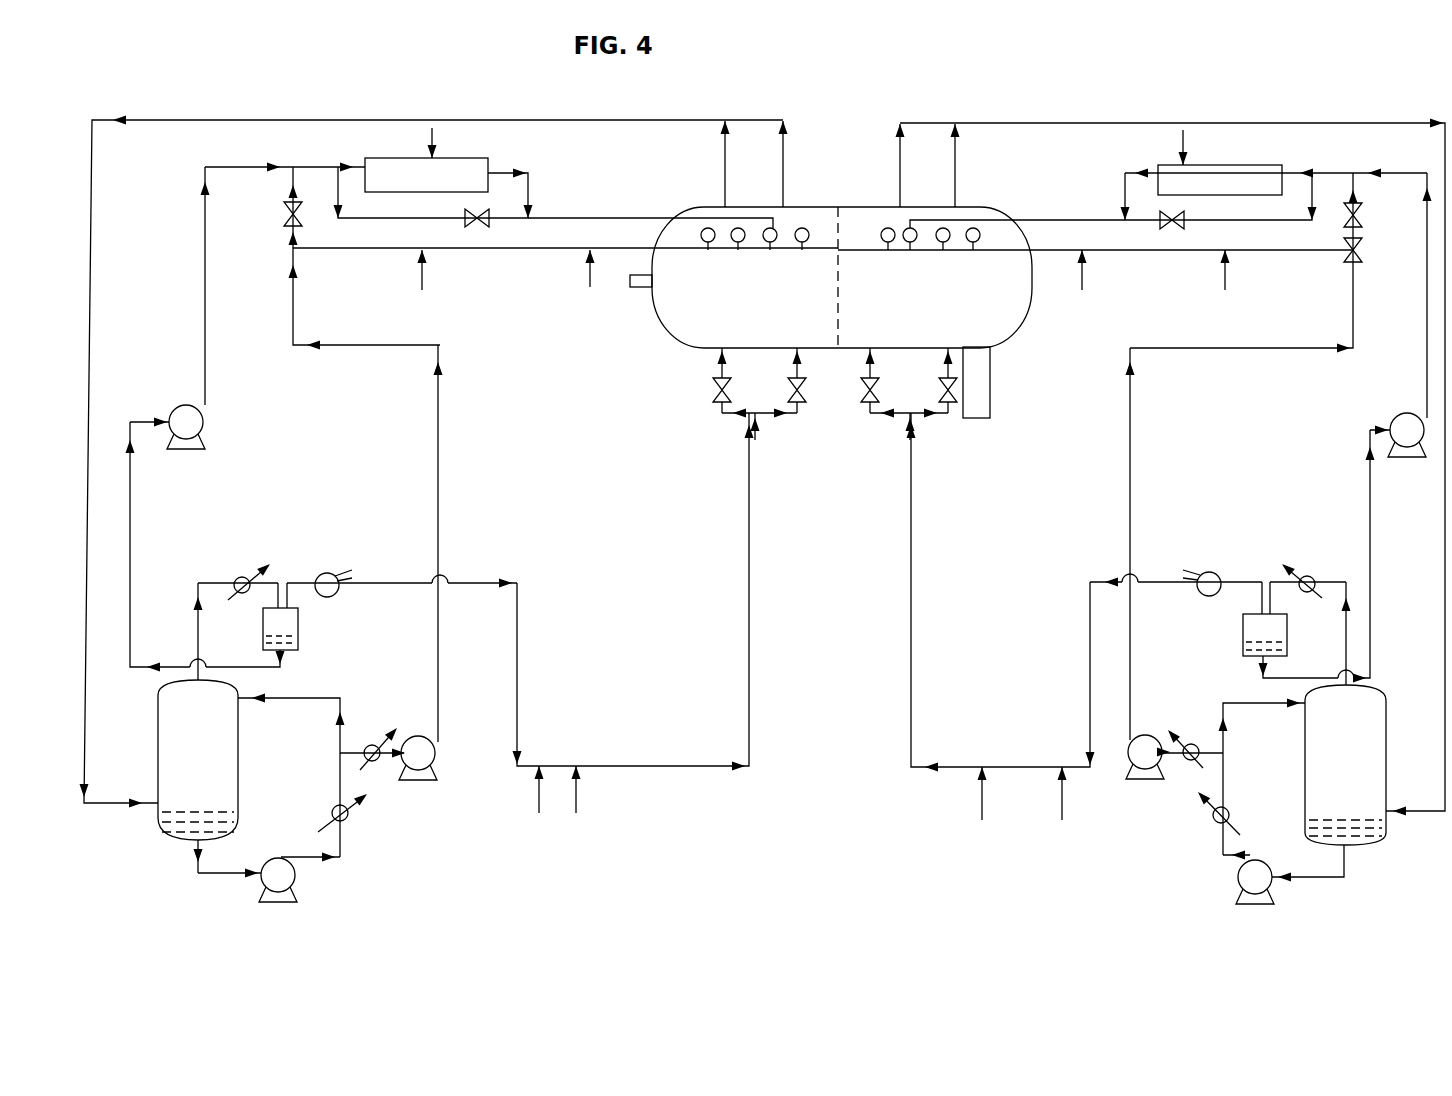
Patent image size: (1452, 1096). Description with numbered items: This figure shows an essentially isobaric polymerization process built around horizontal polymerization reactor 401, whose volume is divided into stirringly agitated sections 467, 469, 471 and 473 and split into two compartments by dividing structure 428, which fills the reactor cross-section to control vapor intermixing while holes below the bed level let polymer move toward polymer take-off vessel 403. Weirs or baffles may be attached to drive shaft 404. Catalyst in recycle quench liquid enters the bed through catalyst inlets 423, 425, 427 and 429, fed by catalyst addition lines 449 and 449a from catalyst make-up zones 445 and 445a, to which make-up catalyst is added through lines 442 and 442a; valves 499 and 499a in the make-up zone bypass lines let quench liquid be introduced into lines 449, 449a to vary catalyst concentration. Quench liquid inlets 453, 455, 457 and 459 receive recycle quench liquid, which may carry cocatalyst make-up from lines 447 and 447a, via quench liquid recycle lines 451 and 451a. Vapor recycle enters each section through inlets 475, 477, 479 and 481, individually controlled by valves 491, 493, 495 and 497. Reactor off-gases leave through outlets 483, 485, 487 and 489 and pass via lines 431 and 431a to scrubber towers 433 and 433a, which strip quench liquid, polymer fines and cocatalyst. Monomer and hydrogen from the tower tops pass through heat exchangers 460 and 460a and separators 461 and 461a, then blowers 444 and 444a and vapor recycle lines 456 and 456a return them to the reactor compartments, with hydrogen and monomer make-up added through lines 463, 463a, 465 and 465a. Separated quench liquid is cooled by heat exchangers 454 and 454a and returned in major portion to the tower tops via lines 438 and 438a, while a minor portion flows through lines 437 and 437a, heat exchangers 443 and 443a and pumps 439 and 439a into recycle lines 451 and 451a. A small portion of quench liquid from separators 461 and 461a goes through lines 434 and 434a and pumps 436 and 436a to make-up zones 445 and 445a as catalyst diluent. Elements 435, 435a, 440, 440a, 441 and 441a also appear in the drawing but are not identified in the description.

The horizontal polymerization reactor 401 is at (1030, 322).
The polymer take-off vessel 403 is at (990, 385).
The drive shaft 404 is at (640, 287).
The catalyst inlet 423 is at (706, 250).
The catalyst inlet 425 is at (770, 250).
The catalyst inlet 427 is at (912, 228).
The dividing structure 428 is at (852, 295).
The catalyst inlet 429 is at (943, 250).
The line 431 is at (545, 120).
The line 431a is at (1238, 123).
The scrubber tower 433 is at (158, 728).
The scrubber tower 433a is at (1386, 748).
The line 434 is at (130, 505).
The line 434a is at (1366, 468).
The pump 435 is at (290, 900).
The pump 435a is at (1238, 885).
The pump 436 is at (205, 428).
The pump 436a is at (1400, 415).
The line 437 is at (355, 752).
The line 437a is at (1205, 755).
The line 438 is at (335, 735).
The line 438a is at (1225, 742).
The pump 439 is at (430, 785).
The pump 439a is at (1150, 775).
The feed line 440 is at (425, 275).
The feed line 440a is at (1228, 283).
The valve 441 is at (285, 212).
The valve 441a is at (1362, 228).
The line 442 is at (440, 135).
The line 442a is at (1190, 140).
The heat exchanger 443 is at (368, 745).
The heat exchanger 443a is at (1197, 745).
The blower 444 is at (335, 595).
The blower 444a is at (1218, 573).
The catalyst make-up zone 445 is at (400, 165).
The catalyst make-up zone 445a is at (1262, 170).
The line 447 is at (588, 287).
The line 447a is at (1085, 280).
The catalyst addition line 449 is at (626, 218).
The catalyst addition line 449a is at (1062, 220).
The quench liquid recycle line 451 is at (525, 250).
The quench liquid recycle line 451a is at (1190, 250).
The quench liquid inlet 453 is at (742, 228).
The heat exchanger 454 is at (348, 818).
The heat exchanger 454a is at (1210, 828).
The quench liquid inlet 455 is at (808, 230).
The vapor recycle line 456 is at (676, 770).
The vapor recycle line 456a is at (968, 767).
The quench liquid inlet 457 is at (884, 228).
The quench liquid inlet 459 is at (973, 250).
The heat exchanger 460 is at (232, 580).
The heat exchanger 460a is at (1320, 572).
The separator 461 is at (298, 638).
The separator 461a is at (1243, 650).
The line 463 is at (537, 800).
The line 463a is at (1055, 800).
The line 465 is at (578, 805).
The line 465a is at (978, 805).
The stirringly agitated section 467 is at (704, 335).
The stirringly agitated section 469 is at (777, 335).
The stirringly agitated section 471 is at (847, 335).
The stirringly agitated section 473 is at (925, 335).
The inlet 475 is at (715, 352).
The inlet 477 is at (792, 352).
The inlet 479 is at (866, 352).
The inlet 481 is at (944, 352).
The outlet 483 is at (962, 200).
The outlet 485 is at (898, 200).
The outlet 487 is at (790, 202).
The outlet 489 is at (722, 195).
The valve 491 is at (712, 386).
The valve 493 is at (789, 388).
The valve 495 is at (862, 392).
The valve 497 is at (940, 390).
The valve 499 is at (482, 226).
The valve 499a is at (1190, 218).